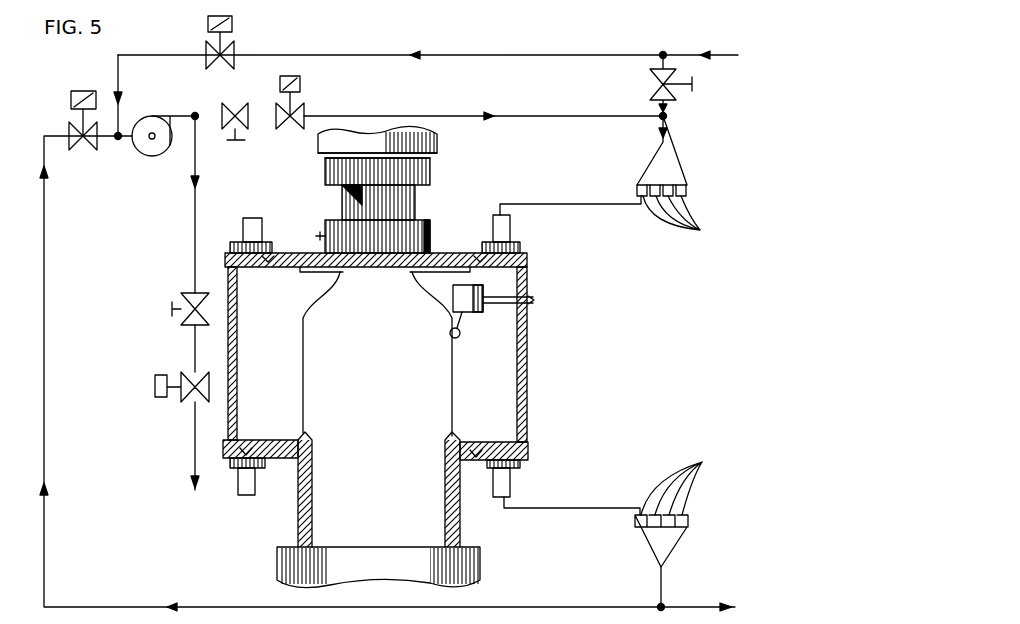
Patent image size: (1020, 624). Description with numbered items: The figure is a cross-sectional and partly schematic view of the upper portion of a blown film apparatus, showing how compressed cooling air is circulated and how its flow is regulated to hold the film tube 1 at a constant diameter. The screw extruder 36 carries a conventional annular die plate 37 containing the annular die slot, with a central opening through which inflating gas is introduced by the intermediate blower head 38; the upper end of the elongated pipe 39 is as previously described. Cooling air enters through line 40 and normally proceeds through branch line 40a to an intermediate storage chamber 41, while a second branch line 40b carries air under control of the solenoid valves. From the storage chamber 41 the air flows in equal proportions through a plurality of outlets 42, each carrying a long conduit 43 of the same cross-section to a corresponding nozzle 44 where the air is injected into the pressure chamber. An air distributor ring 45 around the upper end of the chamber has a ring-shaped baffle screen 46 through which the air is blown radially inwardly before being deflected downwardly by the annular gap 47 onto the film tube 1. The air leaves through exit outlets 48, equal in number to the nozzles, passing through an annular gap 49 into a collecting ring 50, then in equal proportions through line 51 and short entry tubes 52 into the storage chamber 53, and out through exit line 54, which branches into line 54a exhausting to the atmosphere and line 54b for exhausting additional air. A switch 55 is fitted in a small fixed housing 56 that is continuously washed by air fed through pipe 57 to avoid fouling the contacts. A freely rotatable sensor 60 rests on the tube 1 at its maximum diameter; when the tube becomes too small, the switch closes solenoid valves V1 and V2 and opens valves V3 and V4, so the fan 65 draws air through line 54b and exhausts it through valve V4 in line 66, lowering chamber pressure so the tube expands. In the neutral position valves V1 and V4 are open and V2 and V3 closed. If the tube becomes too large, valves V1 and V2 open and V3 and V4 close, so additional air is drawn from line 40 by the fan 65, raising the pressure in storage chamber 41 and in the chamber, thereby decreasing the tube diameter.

The film tube 1 is at (302, 366).
The screw extruder 36 is at (440, 146).
The annular die plate 37 is at (413, 230).
The intermediate blower head 38 is at (345, 200).
The elongated pipe 39 is at (462, 528).
The line 40 is at (683, 55).
The branch line 40a is at (668, 118).
The branch line 40b is at (548, 55).
The intermediate storage chamber 41 is at (673, 170).
The outlets 42 is at (686, 219).
The conduit 43 is at (612, 204).
The nozzle 44 is at (262, 225).
The air distributor ring 45 is at (225, 255).
The ring-shaped baffle screen 46 is at (268, 266).
The annular gap 47 is at (280, 262).
The exit outlets 48 is at (256, 485).
The annular gap 49 is at (275, 447).
The collecting ring 50 is at (243, 448).
The line 51 is at (568, 508).
The short entry tubes 52 is at (685, 483).
The storage chamber 53 is at (672, 545).
The exit line 54 is at (663, 586).
The line 54a is at (705, 607).
The line 54b is at (550, 607).
The switch 55 is at (472, 305).
The housing 56 is at (483, 290).
The pipe 57 is at (530, 305).
The sensor 60 is at (458, 338).
The fan 65 is at (147, 158).
The line 66 is at (193, 245).
The solenoid valve V1 is at (232, 53).
The solenoid valve V2 is at (306, 114).
The solenoid valve V3 is at (77, 146).
The solenoid valve V4 is at (185, 395).